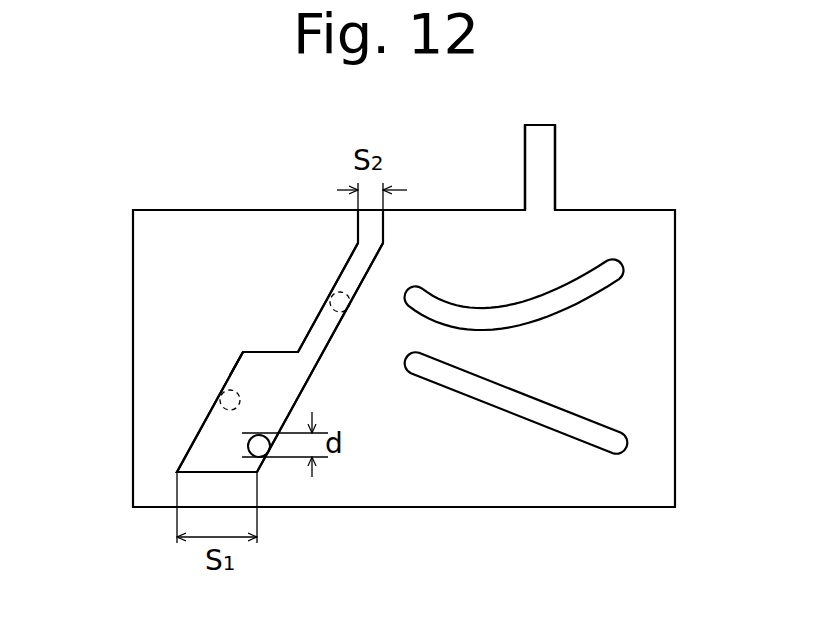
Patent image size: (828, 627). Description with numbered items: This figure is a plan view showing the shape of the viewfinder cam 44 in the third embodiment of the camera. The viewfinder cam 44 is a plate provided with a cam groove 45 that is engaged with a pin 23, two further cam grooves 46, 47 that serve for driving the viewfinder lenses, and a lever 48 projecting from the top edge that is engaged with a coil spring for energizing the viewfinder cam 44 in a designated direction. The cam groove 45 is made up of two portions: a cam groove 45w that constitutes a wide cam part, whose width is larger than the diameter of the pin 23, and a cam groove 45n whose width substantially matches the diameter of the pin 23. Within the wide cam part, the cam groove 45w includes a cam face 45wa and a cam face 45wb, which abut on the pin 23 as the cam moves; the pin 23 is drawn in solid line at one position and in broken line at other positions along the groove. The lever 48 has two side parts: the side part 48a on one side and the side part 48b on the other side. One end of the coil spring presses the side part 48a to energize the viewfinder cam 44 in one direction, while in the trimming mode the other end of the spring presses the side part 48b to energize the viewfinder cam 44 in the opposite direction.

The viewfinder cam 44 is at (158, 377).
The cam groove 45 is at (273, 367).
The cam face 45wb is at (239, 371).
The cam face 45wa is at (298, 392).
The cam groove 45w is at (213, 453).
The cam groove 45n is at (358, 267).
The pin 23 is at (259, 458).
The cam groove 46 is at (610, 442).
The cam groove 47 is at (603, 280).
The lever 48 is at (547, 148).
The side part 48a is at (555, 192).
The side part 48b is at (523, 182).